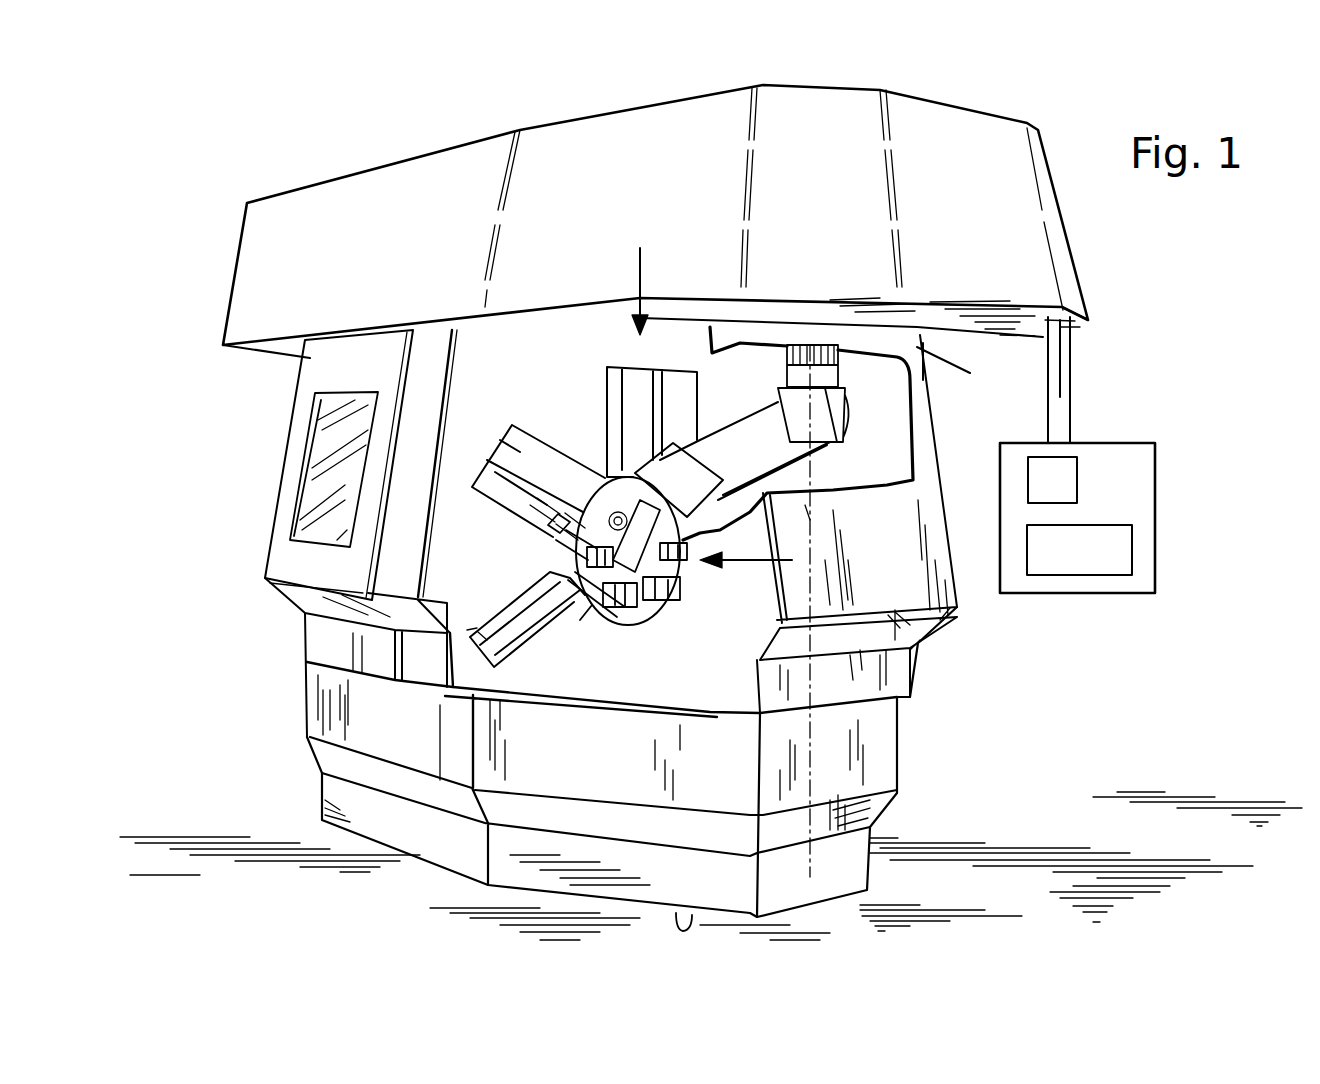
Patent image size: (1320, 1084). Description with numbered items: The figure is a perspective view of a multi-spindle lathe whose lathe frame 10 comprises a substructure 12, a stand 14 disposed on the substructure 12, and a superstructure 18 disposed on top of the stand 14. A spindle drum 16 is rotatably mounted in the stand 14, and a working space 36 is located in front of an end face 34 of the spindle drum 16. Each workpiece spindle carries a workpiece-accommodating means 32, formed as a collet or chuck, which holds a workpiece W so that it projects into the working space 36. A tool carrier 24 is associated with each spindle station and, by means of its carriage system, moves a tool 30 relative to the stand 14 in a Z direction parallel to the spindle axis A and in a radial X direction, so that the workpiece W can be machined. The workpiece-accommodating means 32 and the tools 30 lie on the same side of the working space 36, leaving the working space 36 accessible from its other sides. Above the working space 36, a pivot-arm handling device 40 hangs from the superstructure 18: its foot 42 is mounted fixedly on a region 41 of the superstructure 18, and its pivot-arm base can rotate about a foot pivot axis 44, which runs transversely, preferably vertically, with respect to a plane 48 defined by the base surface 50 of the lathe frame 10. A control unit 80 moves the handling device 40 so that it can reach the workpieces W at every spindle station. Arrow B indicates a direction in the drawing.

The lathe frame 10 is at (338, 641).
The substructure 12 is at (350, 737).
The stand 14 is at (457, 540).
The spindle drum 16 is at (665, 630).
The superstructure 18 is at (295, 277).
The tool carrier 24 is at (482, 482).
The tool 30 is at (537, 537).
The workpiece-accommodating means 32 is at (600, 610).
The end face 34 is at (615, 497).
The working space 36 is at (610, 490).
The pivot-arm handling device 40 is at (917, 603).
The region 41 is at (825, 308).
The foot 42 is at (840, 363).
The foot pivot axis 44 is at (810, 787).
The plane 48 is at (1027, 904).
The base surface 50 is at (687, 927).
The control unit 80 is at (1140, 475).
The workpiece W is at (580, 557).
The spindle axis A is at (746, 547).
The direction arrow B is at (649, 287).